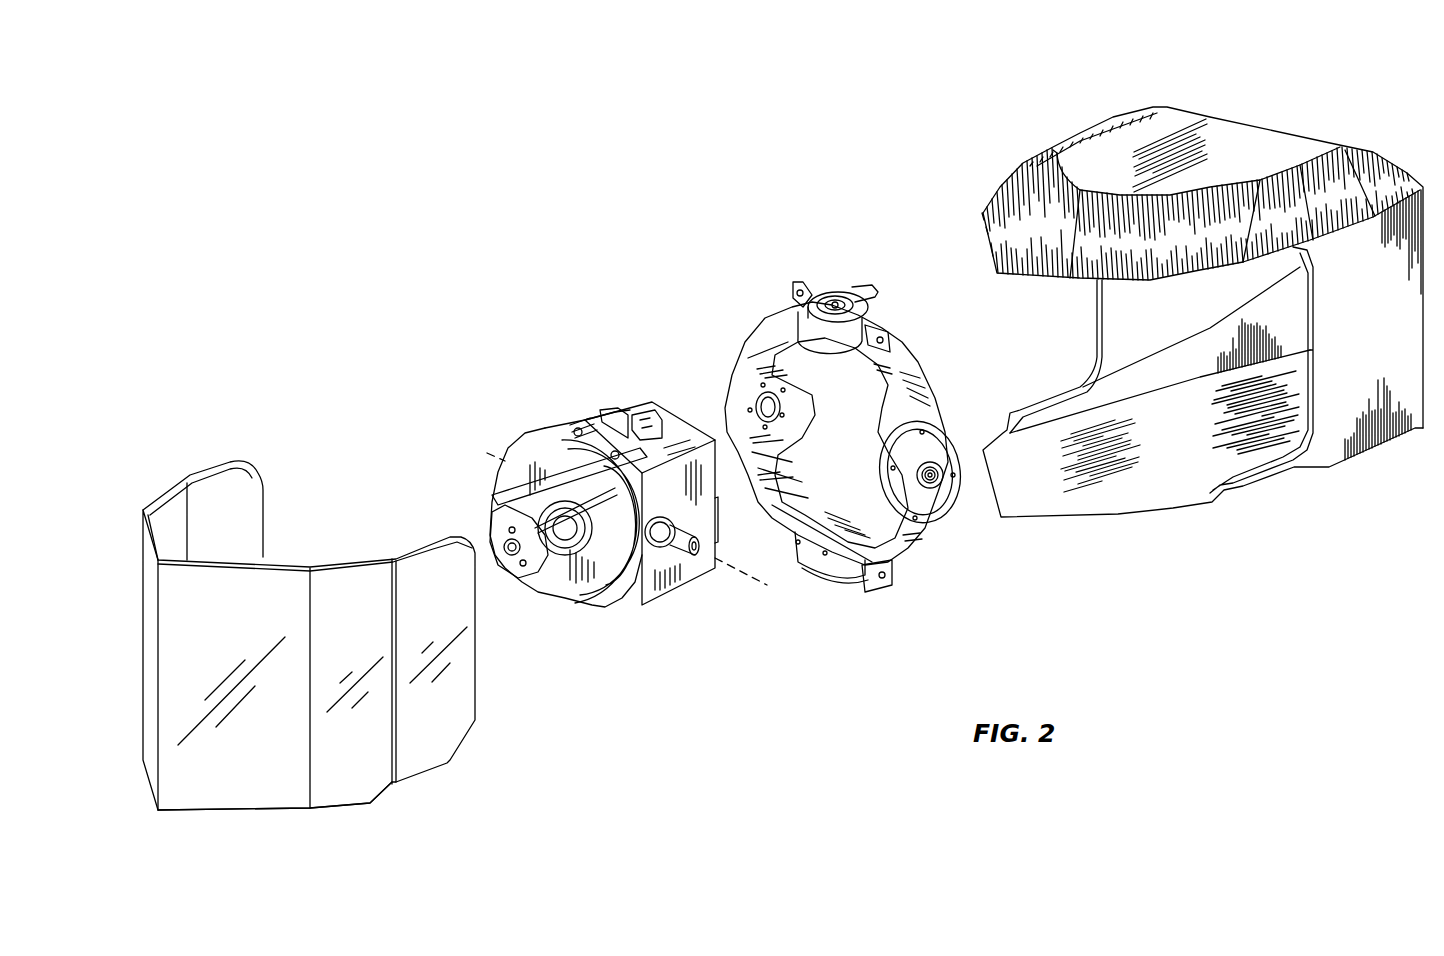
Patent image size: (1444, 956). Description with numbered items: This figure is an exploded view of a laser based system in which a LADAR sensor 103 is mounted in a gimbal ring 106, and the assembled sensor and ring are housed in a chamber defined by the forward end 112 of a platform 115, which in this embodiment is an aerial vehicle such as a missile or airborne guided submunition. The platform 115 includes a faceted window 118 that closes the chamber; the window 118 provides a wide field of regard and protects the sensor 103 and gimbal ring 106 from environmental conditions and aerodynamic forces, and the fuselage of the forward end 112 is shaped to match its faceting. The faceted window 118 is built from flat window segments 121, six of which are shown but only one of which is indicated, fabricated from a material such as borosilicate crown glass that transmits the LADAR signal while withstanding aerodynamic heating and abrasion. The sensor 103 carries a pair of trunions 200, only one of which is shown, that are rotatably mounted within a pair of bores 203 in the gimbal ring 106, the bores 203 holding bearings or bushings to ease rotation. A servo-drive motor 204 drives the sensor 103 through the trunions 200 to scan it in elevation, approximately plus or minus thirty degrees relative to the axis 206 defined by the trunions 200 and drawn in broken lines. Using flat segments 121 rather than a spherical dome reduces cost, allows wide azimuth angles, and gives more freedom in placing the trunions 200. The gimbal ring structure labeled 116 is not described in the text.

The sensor 103 is at (598, 417).
The gimbal ring 106 is at (1165, 498).
The forward end 112 is at (1090, 147).
The platform 115 is at (1233, 117).
The gimbal frame 116 is at (755, 320).
The faceted window 118 is at (200, 470).
The flat window segments 121 is at (370, 788).
The trunions 200 is at (670, 540).
The bores 203 is at (748, 398).
The servo-drive motor 204 is at (935, 492).
The axis 206 is at (487, 453).